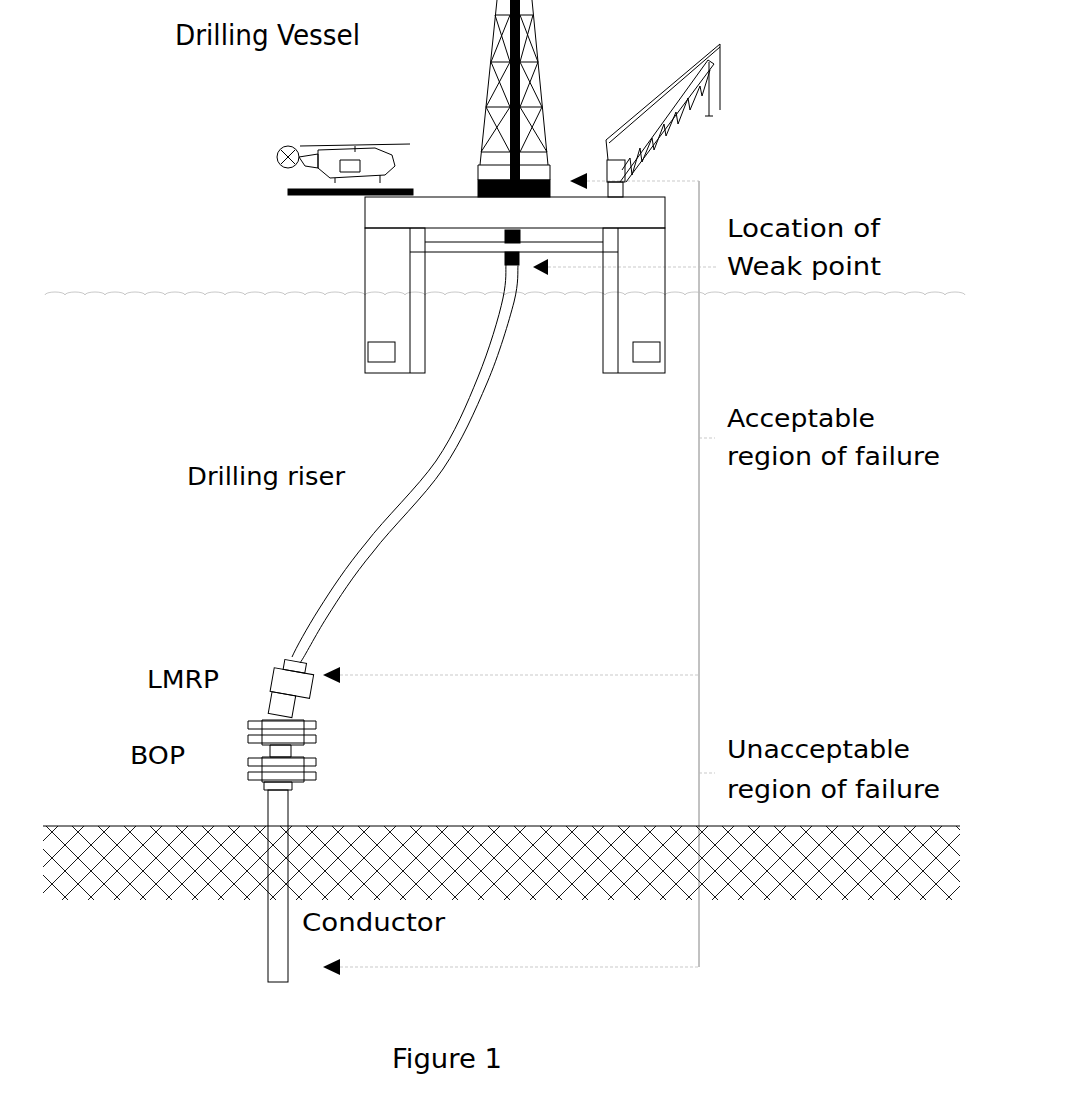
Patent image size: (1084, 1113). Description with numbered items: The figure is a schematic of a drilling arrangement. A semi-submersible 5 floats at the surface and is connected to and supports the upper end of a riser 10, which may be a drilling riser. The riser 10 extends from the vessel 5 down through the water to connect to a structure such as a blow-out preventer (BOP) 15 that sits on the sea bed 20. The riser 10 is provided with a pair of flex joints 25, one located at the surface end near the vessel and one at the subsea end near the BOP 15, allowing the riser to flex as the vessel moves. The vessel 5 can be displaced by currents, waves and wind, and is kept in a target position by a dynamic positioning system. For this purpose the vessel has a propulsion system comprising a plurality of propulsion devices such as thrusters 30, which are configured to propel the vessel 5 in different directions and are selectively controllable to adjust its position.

The semi-submersible 5 is at (655, 222).
The riser 10 is at (447, 465).
The blow-out preventer (BOP) 15 is at (240, 768).
The sea bed 20 is at (123, 823).
The flex joints 25 is at (520, 268).
The thrusters 30 is at (368, 358).